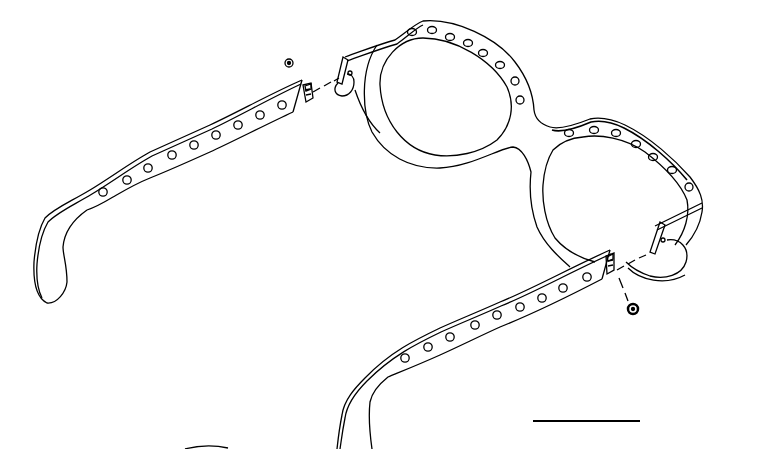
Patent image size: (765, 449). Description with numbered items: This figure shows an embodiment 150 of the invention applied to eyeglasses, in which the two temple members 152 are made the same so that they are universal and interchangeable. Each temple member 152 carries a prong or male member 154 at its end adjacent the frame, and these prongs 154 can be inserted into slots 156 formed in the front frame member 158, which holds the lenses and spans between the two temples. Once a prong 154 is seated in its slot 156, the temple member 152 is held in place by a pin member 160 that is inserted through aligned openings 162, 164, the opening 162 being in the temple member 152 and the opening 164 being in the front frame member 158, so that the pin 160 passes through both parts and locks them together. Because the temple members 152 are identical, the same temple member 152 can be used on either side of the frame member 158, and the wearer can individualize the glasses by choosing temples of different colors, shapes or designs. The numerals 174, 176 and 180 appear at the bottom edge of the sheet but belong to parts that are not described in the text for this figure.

The embodiment 150 is at (175, 92).
The temple members 152 is at (74, 207).
The prongs or male members 154 is at (302, 102).
The slots 156 is at (341, 70).
The front frame member 158 is at (612, 130).
The pin members 160 is at (288, 61).
The opening in temple member 162 is at (308, 84).
The opening in frame member 164 is at (345, 95).
The component 174 is at (23, 441).
The component 176 is at (110, 448).
The component 180 is at (171, 448).